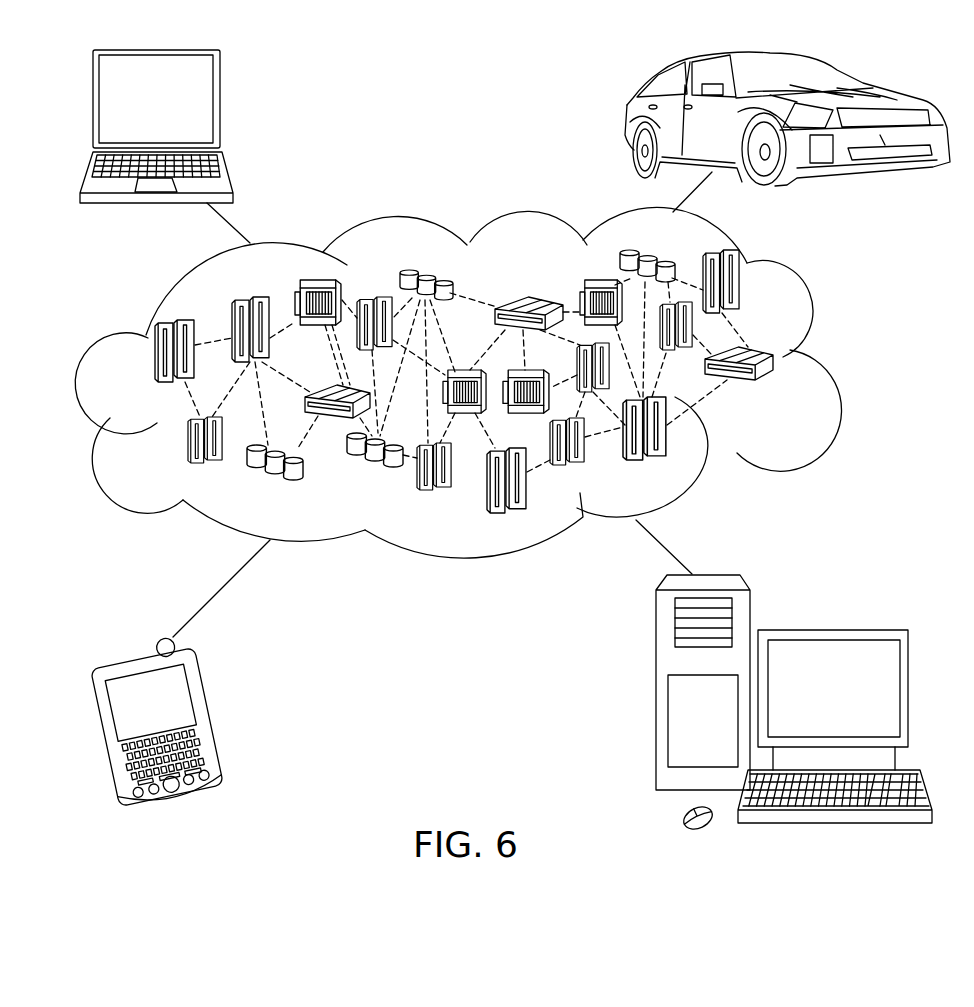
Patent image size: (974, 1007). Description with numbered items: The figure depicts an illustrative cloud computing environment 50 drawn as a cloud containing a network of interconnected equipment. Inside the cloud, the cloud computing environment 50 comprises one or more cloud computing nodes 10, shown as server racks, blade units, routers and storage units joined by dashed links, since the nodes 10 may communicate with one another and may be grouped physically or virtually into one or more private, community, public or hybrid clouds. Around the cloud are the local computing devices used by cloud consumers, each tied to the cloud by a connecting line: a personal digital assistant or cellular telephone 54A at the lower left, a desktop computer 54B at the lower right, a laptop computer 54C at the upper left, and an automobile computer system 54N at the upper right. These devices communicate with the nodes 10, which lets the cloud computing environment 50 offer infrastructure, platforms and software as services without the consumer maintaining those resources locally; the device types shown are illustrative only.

The cloud computing nodes 10 is at (780, 388).
The cloud computing environment 50 is at (836, 356).
The personal digital assistant or cellular telephone 54A is at (212, 714).
The desktop computer 54B is at (832, 630).
The laptop computer 54C is at (221, 106).
The automobile computer system 54N is at (626, 121).